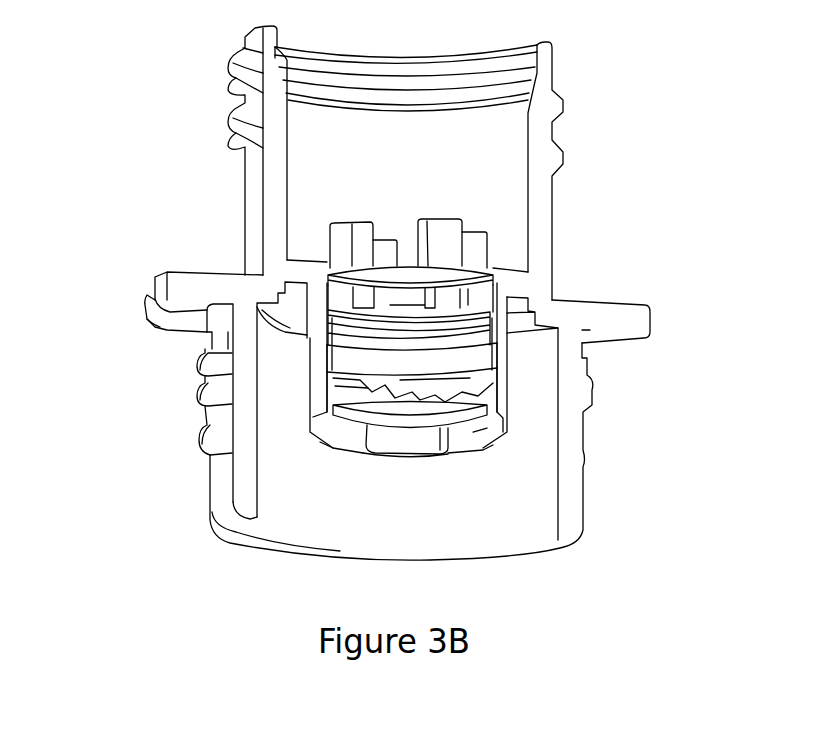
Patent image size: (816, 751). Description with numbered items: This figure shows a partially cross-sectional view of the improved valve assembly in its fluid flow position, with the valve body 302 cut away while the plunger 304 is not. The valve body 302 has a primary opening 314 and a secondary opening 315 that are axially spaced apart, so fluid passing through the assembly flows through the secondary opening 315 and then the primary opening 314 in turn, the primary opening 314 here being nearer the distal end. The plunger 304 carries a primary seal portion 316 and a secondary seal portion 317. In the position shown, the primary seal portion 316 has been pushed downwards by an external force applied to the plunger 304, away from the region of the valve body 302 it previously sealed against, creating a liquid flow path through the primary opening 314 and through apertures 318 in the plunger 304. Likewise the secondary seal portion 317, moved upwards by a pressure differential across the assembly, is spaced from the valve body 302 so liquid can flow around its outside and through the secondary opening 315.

The valve body 302 is at (397, 293).
The plunger 304 is at (343, 247).
The primary opening 314 is at (480, 302).
The secondary opening 315 is at (415, 441).
The primary seal portion 316 is at (476, 297).
The secondary seal portion 317 is at (347, 417).
The apertures 318 is at (386, 296).